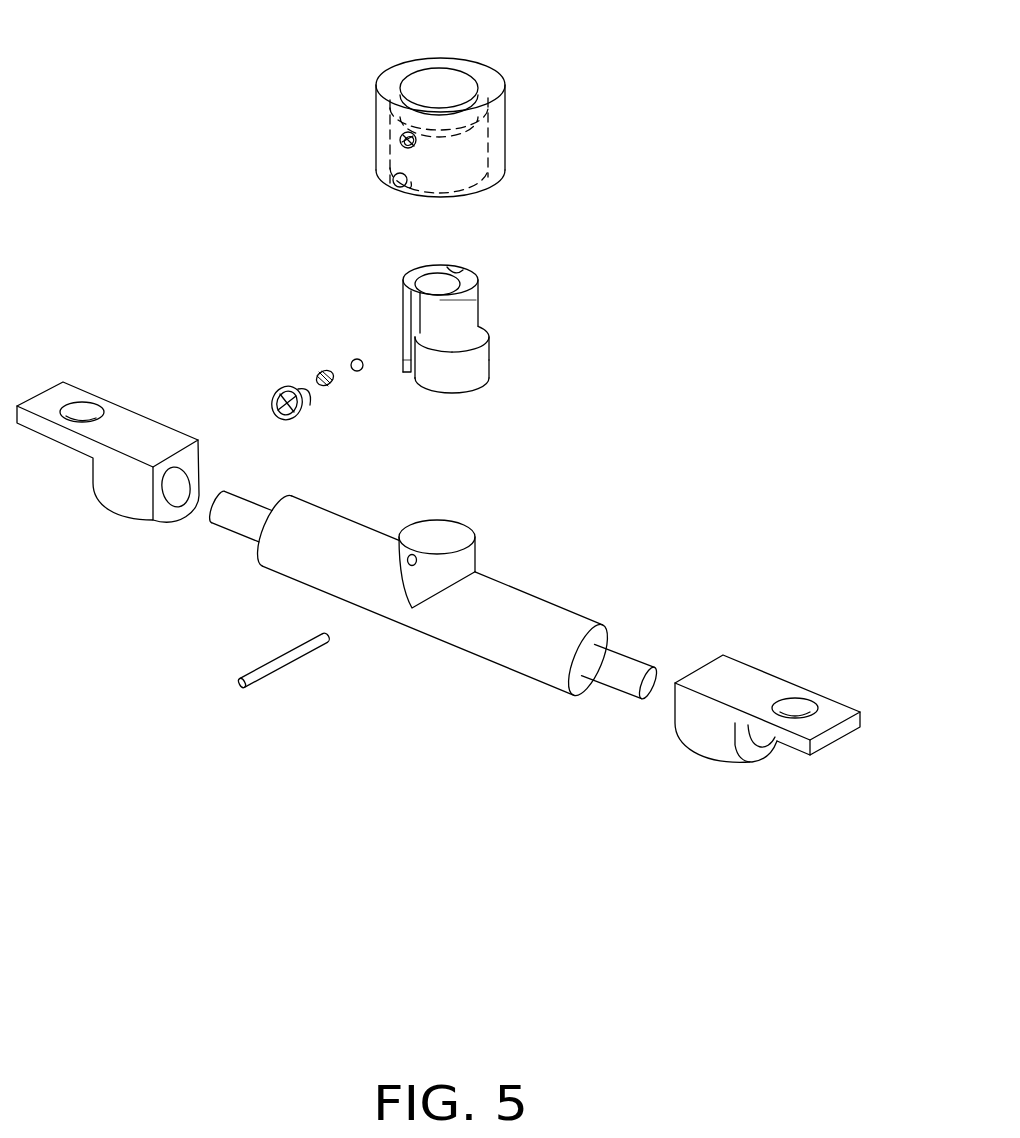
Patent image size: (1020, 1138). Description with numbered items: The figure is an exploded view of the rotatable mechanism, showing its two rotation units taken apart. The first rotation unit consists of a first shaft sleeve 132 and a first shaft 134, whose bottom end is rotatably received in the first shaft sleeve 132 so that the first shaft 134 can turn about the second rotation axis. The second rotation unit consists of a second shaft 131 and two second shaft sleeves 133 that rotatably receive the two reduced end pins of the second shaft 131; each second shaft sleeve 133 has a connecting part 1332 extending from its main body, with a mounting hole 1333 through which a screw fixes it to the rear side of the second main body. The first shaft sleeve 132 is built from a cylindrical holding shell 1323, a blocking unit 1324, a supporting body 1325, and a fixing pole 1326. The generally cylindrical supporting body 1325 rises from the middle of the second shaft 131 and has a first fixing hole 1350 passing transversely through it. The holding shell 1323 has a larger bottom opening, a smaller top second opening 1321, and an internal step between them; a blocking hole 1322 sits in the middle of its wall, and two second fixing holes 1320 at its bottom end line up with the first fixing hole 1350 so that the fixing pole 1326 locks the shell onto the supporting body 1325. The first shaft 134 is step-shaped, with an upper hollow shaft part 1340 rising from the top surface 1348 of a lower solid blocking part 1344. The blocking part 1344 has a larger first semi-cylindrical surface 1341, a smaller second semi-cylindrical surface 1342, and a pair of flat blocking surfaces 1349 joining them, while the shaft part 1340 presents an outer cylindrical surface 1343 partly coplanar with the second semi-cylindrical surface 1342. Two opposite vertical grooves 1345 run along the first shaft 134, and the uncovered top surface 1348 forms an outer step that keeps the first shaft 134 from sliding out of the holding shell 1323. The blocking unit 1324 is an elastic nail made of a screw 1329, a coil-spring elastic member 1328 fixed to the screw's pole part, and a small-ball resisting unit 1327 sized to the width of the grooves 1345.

The second shaft 131 is at (530, 618).
The first shaft sleeve 132 is at (230, 192).
The second shaft sleeve 133 is at (722, 678).
The first shaft 134 is at (463, 289).
The second fixing hole 1320 is at (404, 188).
The second opening 1321 is at (438, 88).
The blocking hole 1322 is at (402, 135).
The holding shell 1323 is at (385, 160).
The blocking unit 1324 is at (271, 279).
The supporting body 1325 is at (467, 558).
The fixing pole 1326 is at (302, 641).
The resisting unit 1327 is at (357, 358).
The elastic member 1328 is at (323, 370).
The screw 1329 is at (288, 388).
The connecting part 1332 is at (758, 690).
The mounting hole 1333 is at (795, 703).
The shaft part 1340 is at (458, 312).
The first semi-cylindrical surface 1341 is at (425, 368).
The second semi-cylindrical surface 1342 is at (402, 367).
The outer cylindrical surface 1343 is at (443, 290).
The blocking part 1344 is at (473, 358).
The groove 1345 is at (408, 373).
The top surface 1348 is at (472, 332).
The flat blocking surface 1349 is at (402, 370).
The first fixing hole 1350 is at (409, 566).